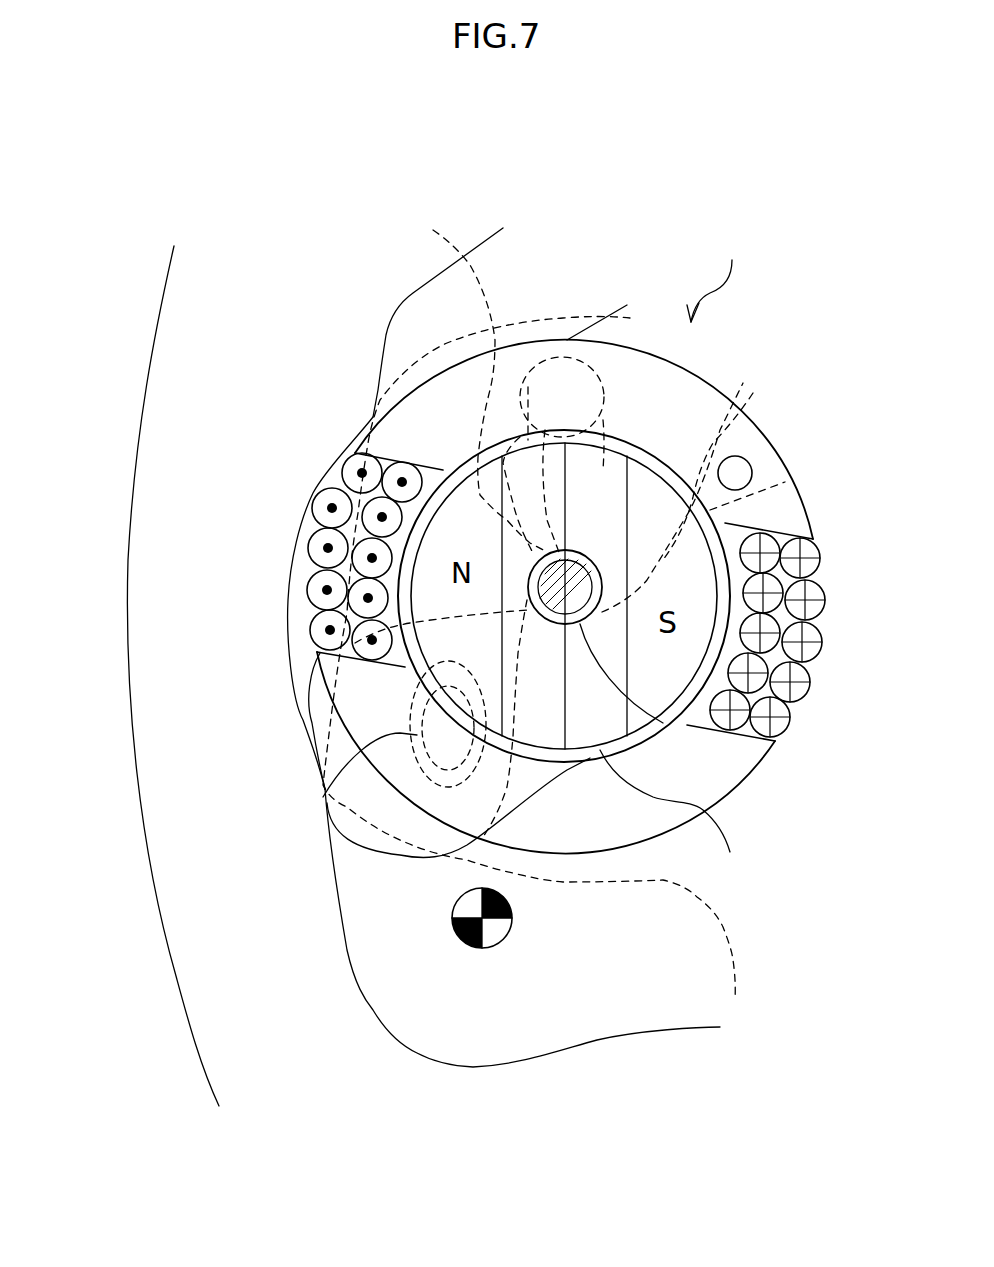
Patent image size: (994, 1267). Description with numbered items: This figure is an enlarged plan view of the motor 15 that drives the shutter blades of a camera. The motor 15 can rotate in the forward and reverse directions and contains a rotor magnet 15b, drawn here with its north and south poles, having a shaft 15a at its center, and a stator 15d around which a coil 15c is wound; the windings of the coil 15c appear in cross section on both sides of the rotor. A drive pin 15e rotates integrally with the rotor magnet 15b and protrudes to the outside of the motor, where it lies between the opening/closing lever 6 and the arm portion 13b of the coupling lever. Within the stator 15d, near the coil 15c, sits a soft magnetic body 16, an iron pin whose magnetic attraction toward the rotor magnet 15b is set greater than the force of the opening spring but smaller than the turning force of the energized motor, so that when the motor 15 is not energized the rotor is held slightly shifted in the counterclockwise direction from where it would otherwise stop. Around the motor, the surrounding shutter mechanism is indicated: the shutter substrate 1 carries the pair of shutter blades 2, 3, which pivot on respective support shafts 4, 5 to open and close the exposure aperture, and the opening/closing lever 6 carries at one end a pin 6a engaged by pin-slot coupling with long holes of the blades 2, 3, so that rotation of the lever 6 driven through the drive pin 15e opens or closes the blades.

The shutter substrate 1 is at (129, 659).
The shutter blade 2 is at (678, 1032).
The shutter blade 3 is at (288, 610).
The support shaft 4 is at (500, 948).
The support shaft 5 is at (529, 611).
The opening/closing lever 6 is at (382, 348).
The pin 6a is at (323, 797).
The arm portion 13b is at (793, 477).
The motor 15 is at (656, 286).
The shaft 15a is at (758, 758).
The rotor magnet 15b is at (677, 817).
The coil 15c is at (323, 500).
The stator 15d is at (593, 823).
The drive pin 15e is at (567, 376).
The soft magnetic body 16 is at (752, 468).